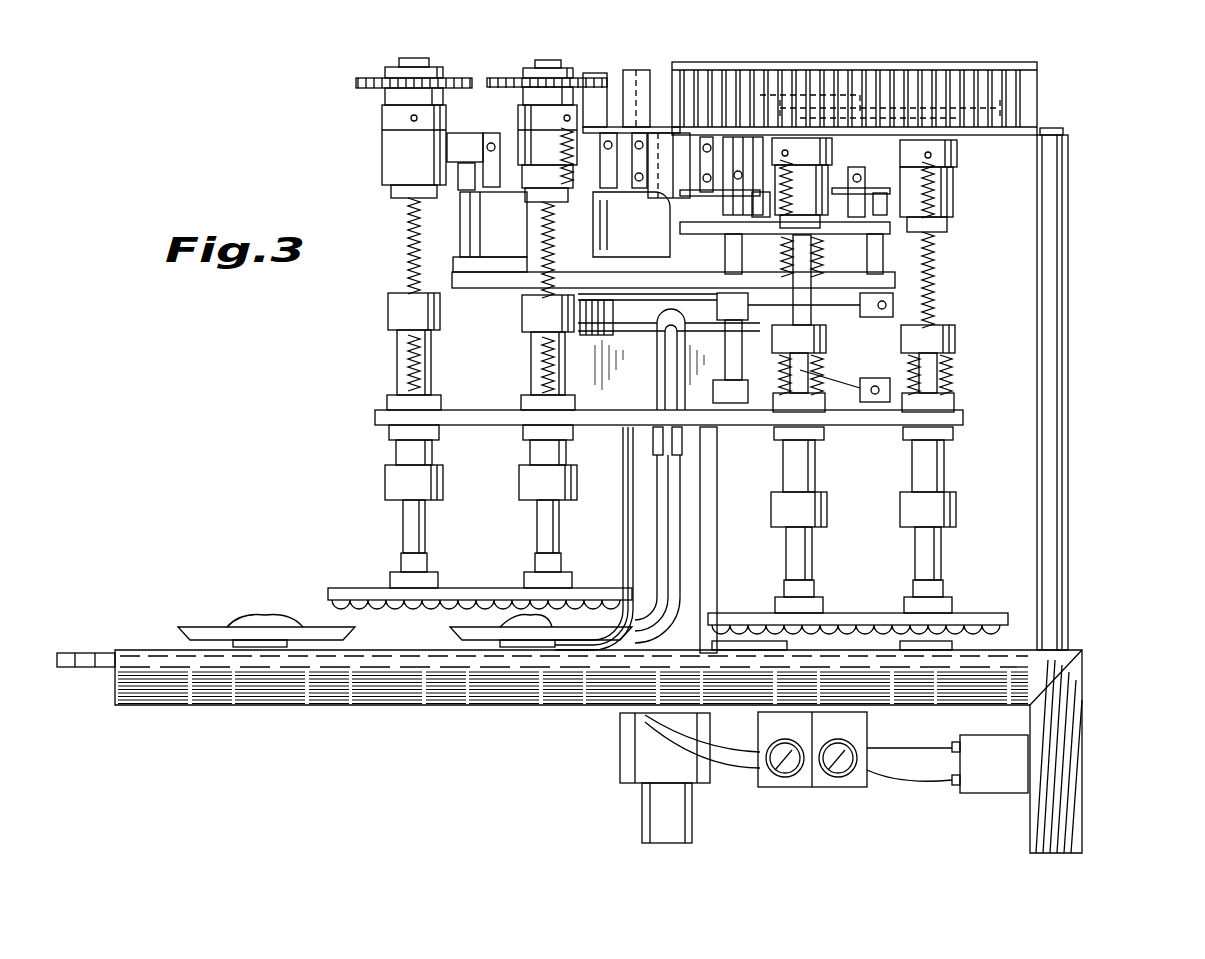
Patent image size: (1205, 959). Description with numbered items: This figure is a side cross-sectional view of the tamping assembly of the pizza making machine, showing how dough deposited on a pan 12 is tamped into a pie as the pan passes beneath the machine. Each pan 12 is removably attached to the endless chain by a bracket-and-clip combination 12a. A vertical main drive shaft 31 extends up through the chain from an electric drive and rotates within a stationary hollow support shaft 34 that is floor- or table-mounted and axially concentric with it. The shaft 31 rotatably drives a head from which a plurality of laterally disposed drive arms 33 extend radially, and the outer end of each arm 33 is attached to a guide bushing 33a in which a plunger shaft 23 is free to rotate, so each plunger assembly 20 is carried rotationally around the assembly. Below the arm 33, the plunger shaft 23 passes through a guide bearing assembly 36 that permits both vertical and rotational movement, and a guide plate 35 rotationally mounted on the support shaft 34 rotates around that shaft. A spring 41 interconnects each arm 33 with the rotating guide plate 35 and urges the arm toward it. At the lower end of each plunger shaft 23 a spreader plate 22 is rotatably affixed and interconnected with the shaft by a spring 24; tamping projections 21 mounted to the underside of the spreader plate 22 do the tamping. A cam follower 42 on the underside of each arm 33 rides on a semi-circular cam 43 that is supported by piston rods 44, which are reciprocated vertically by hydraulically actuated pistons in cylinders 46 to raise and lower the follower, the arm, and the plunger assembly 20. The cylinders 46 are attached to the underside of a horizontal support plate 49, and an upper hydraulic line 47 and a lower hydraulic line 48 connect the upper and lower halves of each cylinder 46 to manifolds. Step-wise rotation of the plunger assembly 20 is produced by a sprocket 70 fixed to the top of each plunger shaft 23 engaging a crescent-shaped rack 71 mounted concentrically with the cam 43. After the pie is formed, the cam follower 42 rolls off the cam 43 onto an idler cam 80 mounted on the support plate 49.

The pan 12 is at (200, 626).
The bracket-and-clip combination 12a is at (228, 640).
The plunger assembly 20 is at (397, 355).
The tamping projections 21 is at (445, 605).
The spreader plate 22 is at (355, 588).
The plunger shaft 23 is at (405, 518).
The spring 24 is at (395, 560).
The main drive shaft 31 is at (668, 110).
The drive arm 33 is at (390, 100).
The guide bushing 33a is at (388, 135).
The stationary hollow support shaft 34 is at (715, 135).
The guide plate 35 is at (378, 415).
The guide bearing assembly 36 is at (390, 430).
The spring 41 is at (410, 335).
The cam follower 42 is at (460, 175).
The cam 43 is at (895, 222).
The piston rod 44 is at (880, 250).
The cylinder 46 is at (865, 320).
The upper hydraulic line 47 is at (893, 300).
The lower hydraulic line 48 is at (890, 385).
The support plate 49 is at (455, 260).
The sprocket 70 is at (590, 70).
The rack 71 is at (780, 60).
The idler cam 80 is at (460, 225).